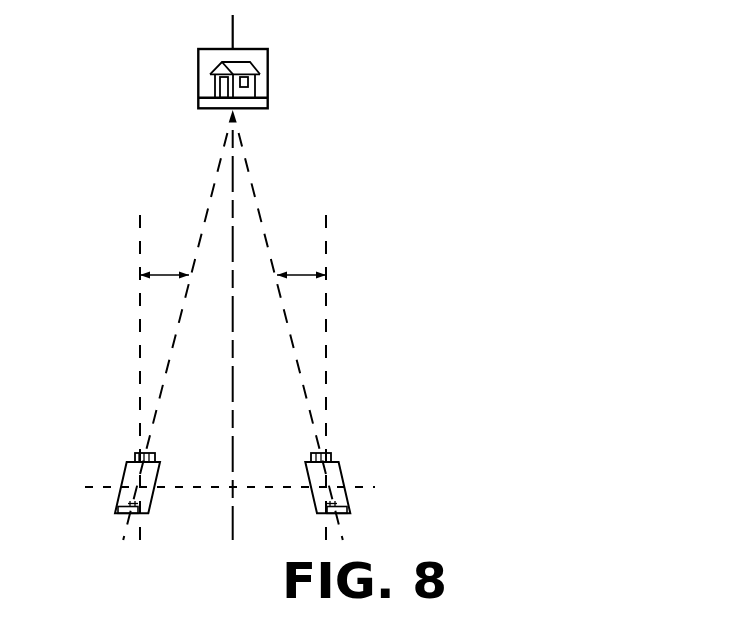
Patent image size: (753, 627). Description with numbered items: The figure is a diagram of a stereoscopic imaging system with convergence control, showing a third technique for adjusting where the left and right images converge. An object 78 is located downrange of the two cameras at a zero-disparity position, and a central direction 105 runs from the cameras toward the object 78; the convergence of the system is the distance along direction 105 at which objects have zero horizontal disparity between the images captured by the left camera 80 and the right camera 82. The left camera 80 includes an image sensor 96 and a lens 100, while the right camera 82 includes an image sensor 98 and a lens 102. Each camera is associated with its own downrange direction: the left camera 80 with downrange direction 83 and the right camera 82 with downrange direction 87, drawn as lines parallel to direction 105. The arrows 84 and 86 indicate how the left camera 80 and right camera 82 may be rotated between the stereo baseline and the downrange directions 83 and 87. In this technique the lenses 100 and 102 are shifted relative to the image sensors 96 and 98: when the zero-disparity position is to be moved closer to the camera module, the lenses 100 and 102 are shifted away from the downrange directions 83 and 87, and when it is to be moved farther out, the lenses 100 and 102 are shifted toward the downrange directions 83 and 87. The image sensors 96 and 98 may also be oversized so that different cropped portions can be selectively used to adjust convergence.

The object 78 is at (247, 49).
The left camera 80 is at (132, 475).
The right camera 82 is at (332, 475).
The downrange direction 83 is at (140, 355).
The arrows 84 is at (163, 275).
The arrows 86 is at (302, 275).
The downrange direction 87 is at (327, 355).
The image sensor 96 is at (127, 506).
The image sensor 98 is at (339, 506).
The lens 100 is at (157, 460).
The lens 102 is at (312, 460).
The direction 105 is at (233, 382).